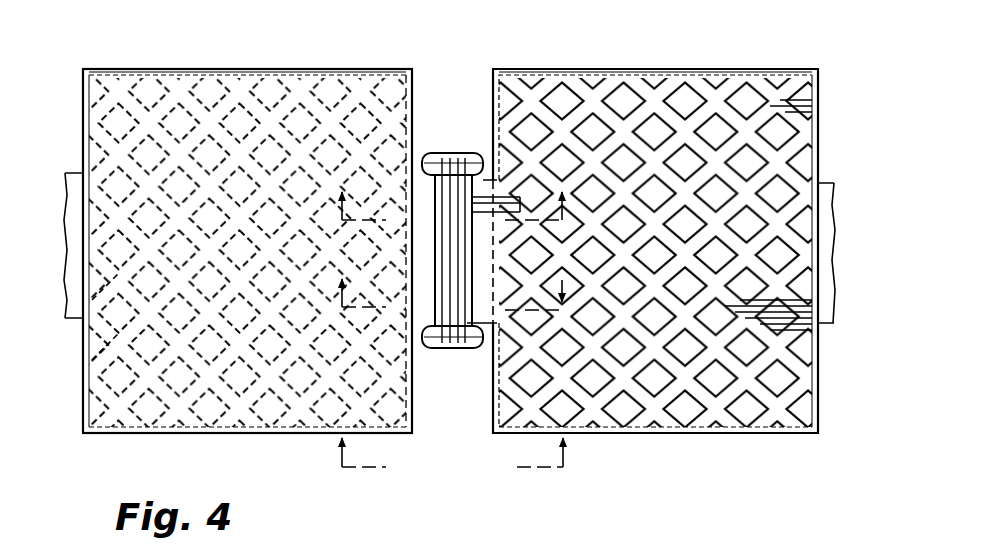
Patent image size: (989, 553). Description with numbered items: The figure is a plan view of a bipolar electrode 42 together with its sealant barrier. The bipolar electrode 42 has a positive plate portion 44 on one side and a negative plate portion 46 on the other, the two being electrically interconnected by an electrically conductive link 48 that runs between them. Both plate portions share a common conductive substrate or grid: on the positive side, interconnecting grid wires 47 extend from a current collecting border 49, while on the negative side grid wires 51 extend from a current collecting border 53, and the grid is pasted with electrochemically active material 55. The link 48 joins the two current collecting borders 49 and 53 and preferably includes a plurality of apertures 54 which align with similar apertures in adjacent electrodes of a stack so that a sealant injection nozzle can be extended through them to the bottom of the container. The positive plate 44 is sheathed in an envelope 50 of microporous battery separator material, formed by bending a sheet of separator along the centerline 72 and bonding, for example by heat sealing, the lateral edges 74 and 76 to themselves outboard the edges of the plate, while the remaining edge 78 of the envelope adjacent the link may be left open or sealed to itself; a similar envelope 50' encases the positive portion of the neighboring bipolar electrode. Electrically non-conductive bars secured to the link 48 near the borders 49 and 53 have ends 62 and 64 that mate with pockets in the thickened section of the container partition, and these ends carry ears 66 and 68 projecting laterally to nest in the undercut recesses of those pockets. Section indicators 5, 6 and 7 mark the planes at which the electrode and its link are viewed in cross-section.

The bipolar electrode 42 is at (806, 72).
The positive plate portion 44 is at (197, 74).
The negative plate portion 46 is at (721, 77).
The grid wires 47 is at (298, 95).
The electrically conductive link 48 is at (484, 330).
The current collecting border 49 is at (398, 80).
The envelope 50 is at (238, 221).
The envelope 50' is at (664, 216).
The grid wires 51 is at (648, 90).
The current collecting border 53 is at (510, 94).
The apertures 54 is at (452, 226).
The electrochemically active material 55 is at (782, 256).
The bar end 62 is at (452, 150).
The bar end 64 is at (452, 352).
The ear 66 is at (430, 173).
The ear 68 is at (424, 334).
The centerline 72 is at (83, 413).
The lateral edge 74 is at (330, 72).
The lateral edge 76 is at (269, 437).
The envelope edge 78 is at (146, 72).
The section line 5- 5 is at (449, 308).
The section line 6- 6 is at (451, 195).
The section line 7- 7 is at (453, 468).